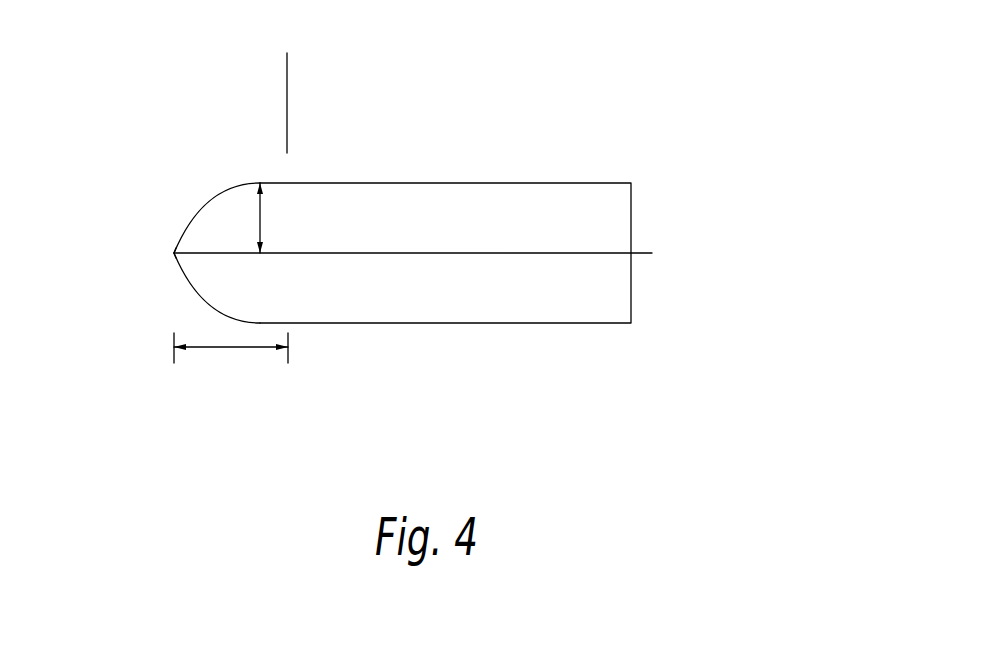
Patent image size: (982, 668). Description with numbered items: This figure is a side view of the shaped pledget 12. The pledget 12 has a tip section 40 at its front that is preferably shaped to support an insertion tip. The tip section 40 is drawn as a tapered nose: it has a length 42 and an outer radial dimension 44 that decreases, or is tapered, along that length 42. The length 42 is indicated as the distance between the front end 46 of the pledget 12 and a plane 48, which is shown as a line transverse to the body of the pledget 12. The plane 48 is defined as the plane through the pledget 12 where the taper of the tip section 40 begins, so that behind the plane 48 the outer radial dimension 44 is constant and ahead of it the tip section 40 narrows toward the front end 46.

The pledget 12 is at (511, 90).
The tip section 40 is at (207, 205).
The length 42 is at (232, 349).
The outer radial dimension 44 is at (260, 218).
The front end 46 is at (174, 253).
The plane 48 is at (287, 83).